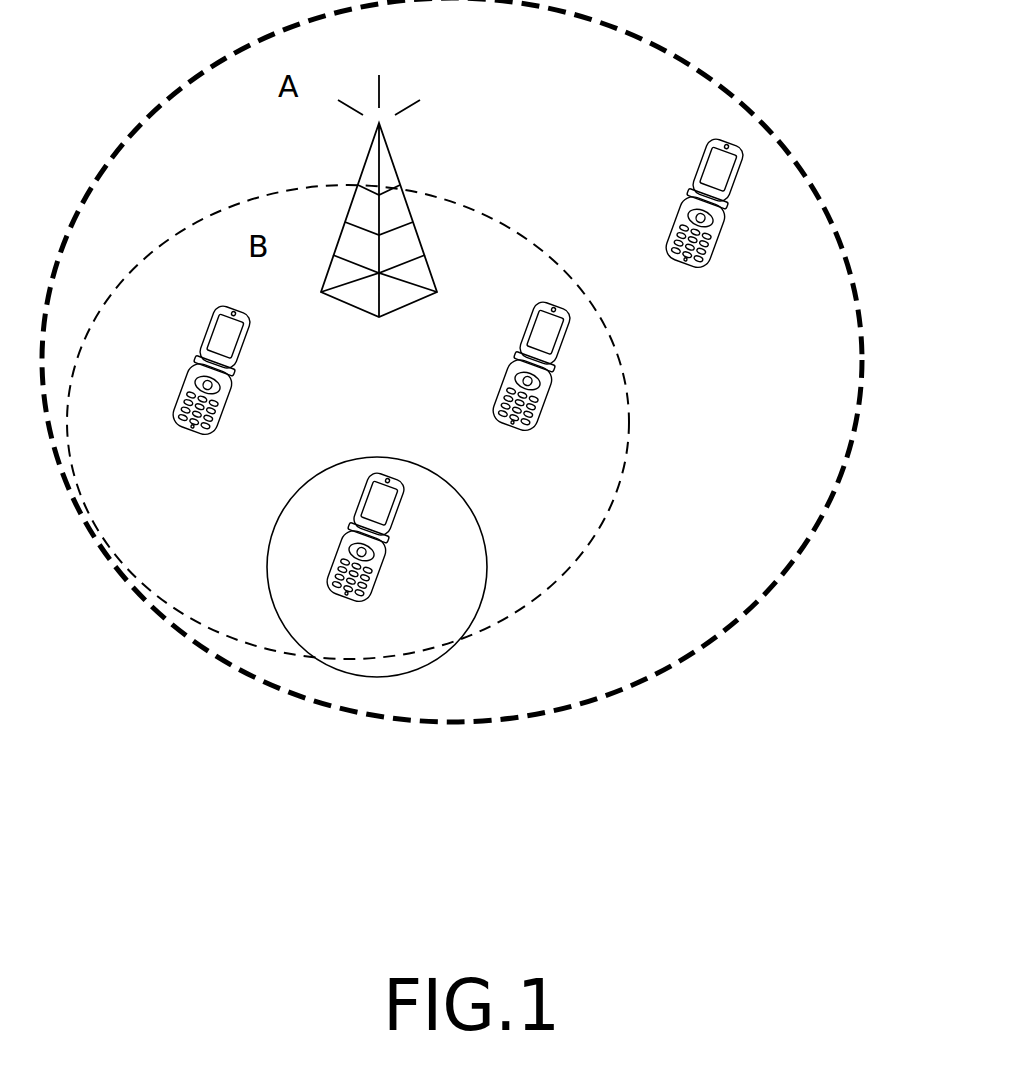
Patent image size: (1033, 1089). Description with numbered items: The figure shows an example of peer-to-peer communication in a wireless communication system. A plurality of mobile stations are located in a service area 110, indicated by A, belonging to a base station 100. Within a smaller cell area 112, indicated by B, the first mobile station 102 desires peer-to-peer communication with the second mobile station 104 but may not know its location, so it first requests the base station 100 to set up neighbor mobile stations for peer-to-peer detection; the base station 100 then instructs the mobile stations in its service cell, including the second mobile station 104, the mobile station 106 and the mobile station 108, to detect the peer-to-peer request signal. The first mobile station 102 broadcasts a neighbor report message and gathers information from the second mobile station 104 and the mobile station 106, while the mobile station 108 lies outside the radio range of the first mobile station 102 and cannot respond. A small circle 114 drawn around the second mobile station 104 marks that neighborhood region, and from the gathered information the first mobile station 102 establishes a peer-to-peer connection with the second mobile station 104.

The base station 100 is at (380, 215).
The MS_1 102 is at (203, 404).
The MS_2 104 is at (367, 569).
The MS_x 106 is at (530, 401).
The MS_y 108 is at (706, 240).
The service area 110 is at (862, 357).
The cell area 112 is at (620, 477).
The neighborhood region of MS_2 114 is at (482, 535).